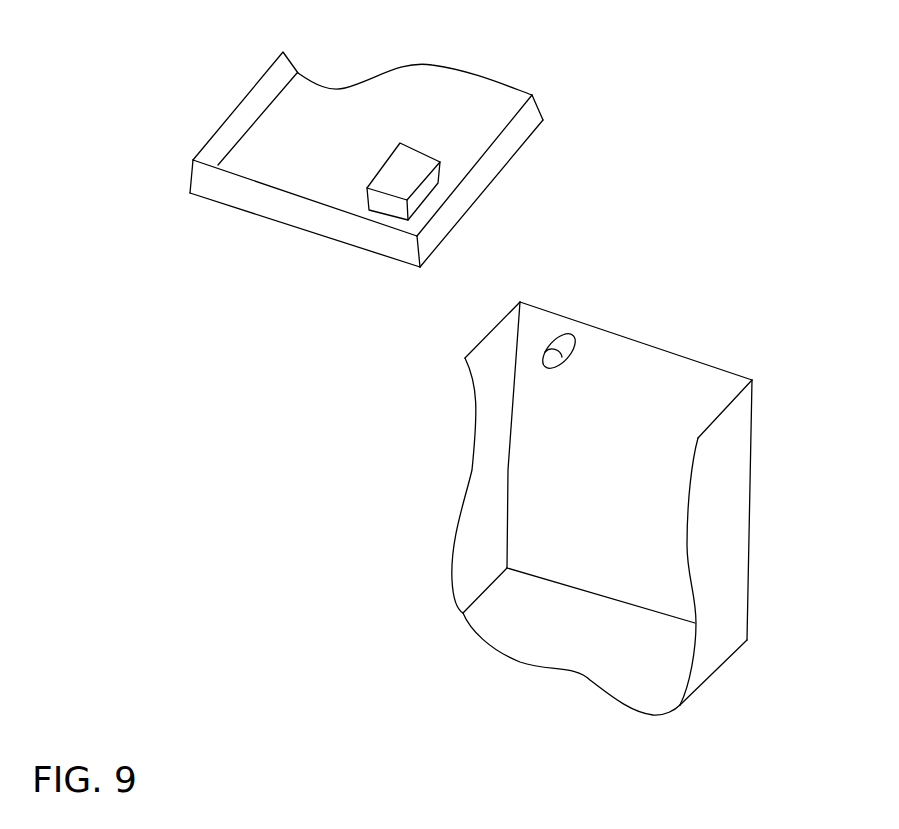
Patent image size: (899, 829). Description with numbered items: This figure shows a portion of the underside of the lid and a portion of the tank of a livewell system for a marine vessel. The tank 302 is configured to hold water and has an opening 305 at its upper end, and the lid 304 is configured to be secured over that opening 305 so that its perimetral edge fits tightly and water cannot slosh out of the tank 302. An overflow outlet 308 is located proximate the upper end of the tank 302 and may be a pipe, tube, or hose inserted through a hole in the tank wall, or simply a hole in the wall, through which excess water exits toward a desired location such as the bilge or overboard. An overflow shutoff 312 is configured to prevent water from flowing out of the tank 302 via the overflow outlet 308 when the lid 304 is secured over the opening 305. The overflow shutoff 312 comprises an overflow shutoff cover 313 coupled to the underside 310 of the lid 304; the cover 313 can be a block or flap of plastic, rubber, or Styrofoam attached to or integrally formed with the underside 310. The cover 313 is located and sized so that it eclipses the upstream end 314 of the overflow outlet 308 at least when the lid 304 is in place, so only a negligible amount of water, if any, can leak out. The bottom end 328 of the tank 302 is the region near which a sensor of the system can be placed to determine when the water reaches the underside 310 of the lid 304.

The tank 302 is at (577, 513).
The lid 304 is at (240, 208).
The opening 305 is at (683, 372).
The overflow outlet 308 is at (573, 354).
The underside of the lid 310 is at (308, 160).
The overflow shutoff 312 is at (444, 136).
The overflow shutoff cover 313 is at (393, 180).
The upstream end of the overflow outlet 314 is at (550, 371).
The bottom end of the tank 328 is at (578, 677).